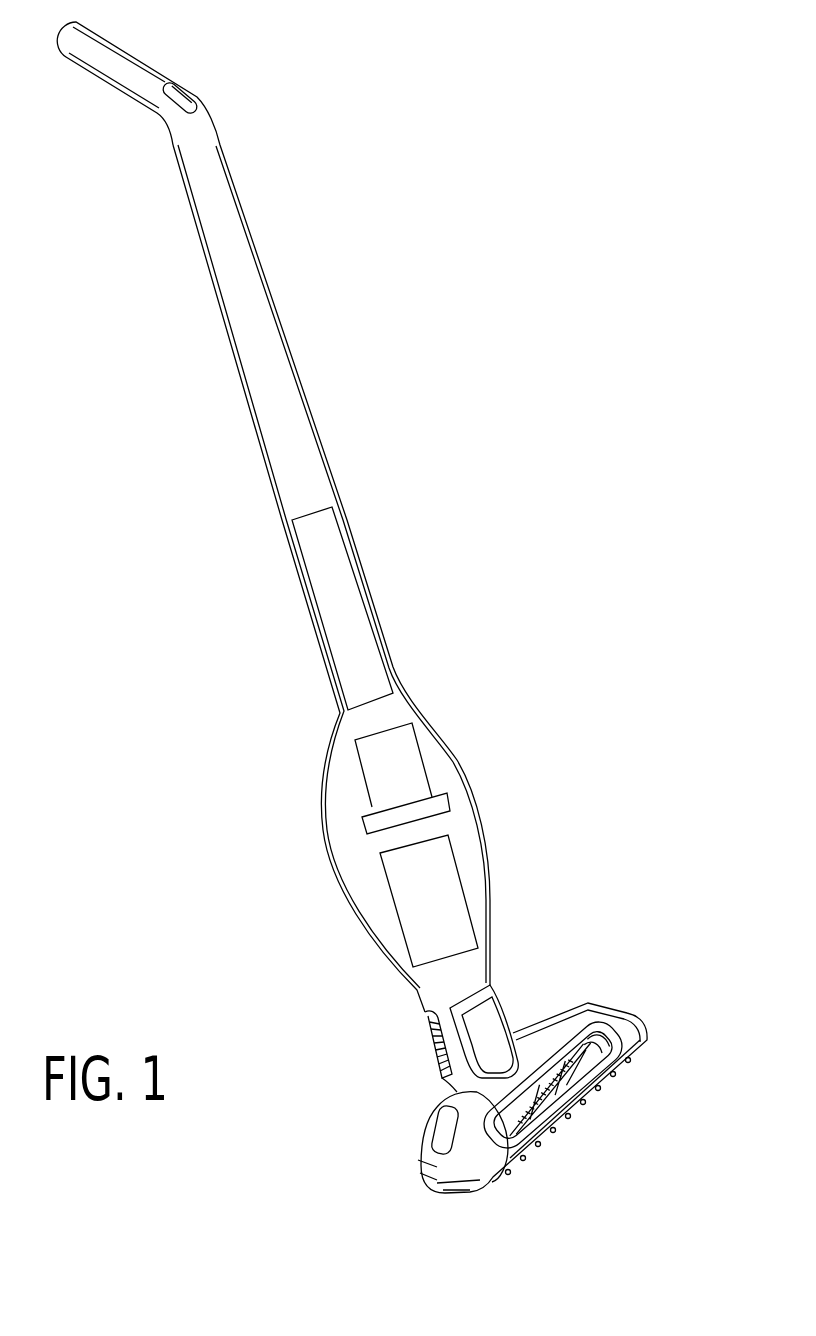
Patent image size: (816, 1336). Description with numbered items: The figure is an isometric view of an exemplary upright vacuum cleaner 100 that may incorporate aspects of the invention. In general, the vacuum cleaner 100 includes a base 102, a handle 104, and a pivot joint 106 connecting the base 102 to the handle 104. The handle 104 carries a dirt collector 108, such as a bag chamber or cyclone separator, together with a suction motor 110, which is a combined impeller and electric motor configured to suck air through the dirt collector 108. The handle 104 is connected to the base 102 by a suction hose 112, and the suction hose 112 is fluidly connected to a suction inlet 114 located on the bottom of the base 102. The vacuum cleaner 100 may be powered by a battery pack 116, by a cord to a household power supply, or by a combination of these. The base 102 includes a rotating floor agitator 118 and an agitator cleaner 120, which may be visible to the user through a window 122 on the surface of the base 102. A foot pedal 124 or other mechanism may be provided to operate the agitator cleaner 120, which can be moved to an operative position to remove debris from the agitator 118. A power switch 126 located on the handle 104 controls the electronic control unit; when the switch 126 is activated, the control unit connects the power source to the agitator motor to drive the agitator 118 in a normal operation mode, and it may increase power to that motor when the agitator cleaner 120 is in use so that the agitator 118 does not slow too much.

The upright vacuum cleaner 100 is at (618, 437).
The base 102 is at (552, 1013).
The handle 104 is at (303, 420).
The pivot joint 106 is at (482, 1040).
The dirt collector 108 is at (442, 863).
The suction motor 110 is at (413, 767).
The suction hose 112 is at (428, 1035).
The suction inlet 114 is at (557, 1128).
The battery pack 116 is at (350, 597).
The rotating floor agitator 118 is at (610, 1037).
The agitator cleaner 120 is at (577, 1037).
The window 122 is at (470, 1090).
The foot pedal 124 is at (420, 1135).
The power switch 126 is at (173, 90).